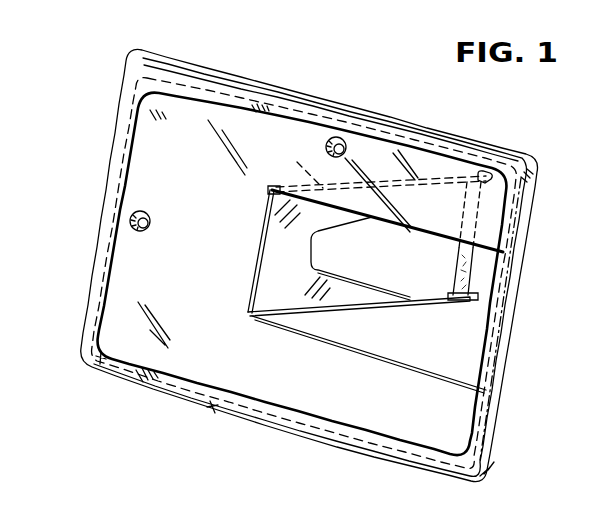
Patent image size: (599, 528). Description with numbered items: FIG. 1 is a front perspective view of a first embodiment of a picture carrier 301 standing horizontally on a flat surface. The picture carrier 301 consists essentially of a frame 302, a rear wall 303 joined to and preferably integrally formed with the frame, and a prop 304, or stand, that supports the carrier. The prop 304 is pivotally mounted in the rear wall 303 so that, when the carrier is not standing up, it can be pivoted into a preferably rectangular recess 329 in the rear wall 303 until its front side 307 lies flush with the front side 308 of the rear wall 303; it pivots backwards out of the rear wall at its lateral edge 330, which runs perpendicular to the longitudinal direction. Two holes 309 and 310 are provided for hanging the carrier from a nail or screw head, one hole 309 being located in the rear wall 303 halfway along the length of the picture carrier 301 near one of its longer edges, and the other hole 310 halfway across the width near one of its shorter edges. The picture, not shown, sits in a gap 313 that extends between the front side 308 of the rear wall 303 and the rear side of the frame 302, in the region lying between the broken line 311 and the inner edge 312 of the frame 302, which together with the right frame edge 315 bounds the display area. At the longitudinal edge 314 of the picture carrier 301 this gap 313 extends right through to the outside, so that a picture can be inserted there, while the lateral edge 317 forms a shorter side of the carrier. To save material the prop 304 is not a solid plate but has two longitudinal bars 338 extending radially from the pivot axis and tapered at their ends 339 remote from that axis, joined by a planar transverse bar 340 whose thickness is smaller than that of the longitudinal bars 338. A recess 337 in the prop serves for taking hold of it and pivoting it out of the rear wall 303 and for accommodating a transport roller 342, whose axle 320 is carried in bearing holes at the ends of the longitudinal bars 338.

The picture carrier 301 is at (340, 80).
The frame 302 is at (108, 203).
The rear wall 303 is at (255, 122).
The prop 304 is at (401, 300).
The front side 307 is at (271, 266).
The front side 308 is at (126, 271).
The hole 309 is at (347, 148).
The hole 310 is at (150, 226).
The broken line 311 is at (212, 406).
The inner edge 312 is at (268, 407).
The gap 313 is at (100, 358).
The longitudinal edge 314 is at (497, 374).
The right frame edge 315 is at (537, 197).
The lateral edge 317 is at (521, 301).
The axle 320 is at (485, 176).
The recess 329 is at (502, 255).
The lateral edge 330 is at (259, 240).
The recess 337 is at (318, 247).
The longitudinal bars 338 is at (357, 352).
The ends 339 is at (466, 300).
The transverse bar 340 is at (300, 259).
The transport roller 342 is at (455, 275).